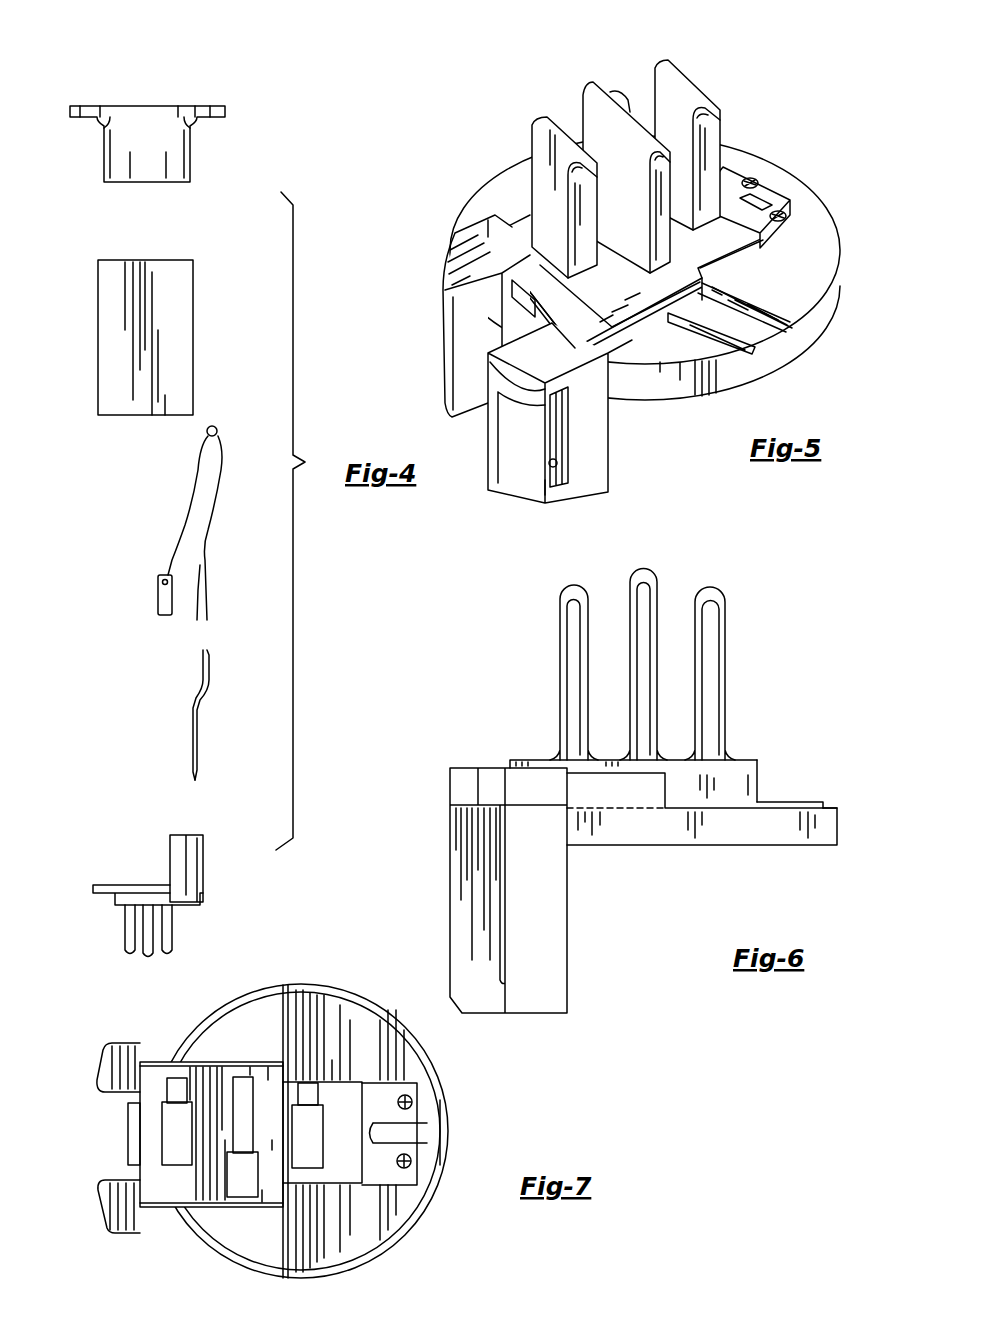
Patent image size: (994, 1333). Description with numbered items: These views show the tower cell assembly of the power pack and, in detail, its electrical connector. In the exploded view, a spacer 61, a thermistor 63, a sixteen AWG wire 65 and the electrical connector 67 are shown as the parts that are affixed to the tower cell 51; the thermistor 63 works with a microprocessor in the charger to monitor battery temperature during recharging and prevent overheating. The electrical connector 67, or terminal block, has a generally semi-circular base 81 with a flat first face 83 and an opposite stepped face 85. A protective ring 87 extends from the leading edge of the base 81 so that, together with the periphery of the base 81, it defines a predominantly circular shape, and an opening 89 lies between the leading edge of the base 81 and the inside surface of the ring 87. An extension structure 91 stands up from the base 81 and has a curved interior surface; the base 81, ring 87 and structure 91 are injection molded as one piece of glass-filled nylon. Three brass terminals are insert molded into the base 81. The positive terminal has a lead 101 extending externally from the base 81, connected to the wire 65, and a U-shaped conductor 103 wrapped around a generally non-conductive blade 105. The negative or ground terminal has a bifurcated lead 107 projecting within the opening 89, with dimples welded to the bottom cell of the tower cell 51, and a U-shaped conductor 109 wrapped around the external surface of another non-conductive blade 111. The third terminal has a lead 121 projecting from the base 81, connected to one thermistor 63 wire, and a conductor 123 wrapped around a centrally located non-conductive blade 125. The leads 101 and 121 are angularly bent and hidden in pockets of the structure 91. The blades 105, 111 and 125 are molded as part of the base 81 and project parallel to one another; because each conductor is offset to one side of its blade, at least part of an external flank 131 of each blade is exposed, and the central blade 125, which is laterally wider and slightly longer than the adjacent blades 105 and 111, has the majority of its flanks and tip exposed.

In FIG. 4, the tower cell 51 is at (120, 333).
In FIG. 4, the spacer 61 is at (110, 150).
In FIG. 4, the thermistor 63 is at (168, 510).
In FIG. 4, the wire 65 is at (195, 730).
In FIG. 4, the electrical connector 67 is at (93, 885).
In FIG. 5, the electrical connector 67 is at (838, 216).
In FIG. 6, the electrical connector 67 is at (645, 892).
In FIG. 7, the electrical connector 67 is at (130, 1025).
In FIG. 5, the base 81 is at (675, 333).
In FIG. 6, the base 81 is at (648, 800).
In FIG. 7, the base 81 is at (312, 1087).
In FIG. 6, the flat first face 83 is at (612, 812).
In FIG. 5, the stepped face 85 is at (505, 232).
In FIG. 6, the stepped face 85 is at (527, 760).
In FIG. 7, the stepped face 85 is at (242, 1040).
In FIG. 5, the protective ring 87 is at (770, 318).
In FIG. 6, the protective ring 87 is at (795, 820).
In FIG. 7, the protective ring 87 is at (425, 1062).
In FIG. 5, the opening 89 is at (748, 350).
In FIG. 7, the opening 89 is at (383, 1063).
In FIG. 5, the extension structure 91 is at (592, 467).
In FIG. 6, the extension structure 91 is at (543, 975).
In FIG. 7, the extension structure 91 is at (112, 1065).
In FIG. 5, the lead 101 is at (518, 317).
In FIG. 7, the lead 101 is at (132, 1140).
In FIG. 5, the U-shaped conductor 103 is at (563, 140).
In FIG. 6, the U-shaped conductor 103 is at (573, 605).
In FIG. 7, the U-shaped conductor 103 is at (178, 1152).
In FIG. 5, the non-conductive blade 105 is at (535, 135).
In FIG. 6, the non-conductive blade 105 is at (573, 643).
In FIG. 7, the non-conductive blade 105 is at (180, 1080).
In FIG. 5, the bifurcated lead 107 is at (745, 165).
In FIG. 6, the bifurcated lead 107 is at (787, 802).
In FIG. 7, the bifurcated lead 107 is at (420, 1113).
In FIG. 5, the conductor 109 is at (710, 95).
In FIG. 6, the conductor 109 is at (705, 592).
In FIG. 7, the conductor 109 is at (310, 1160).
In FIG. 5, the non-conductive blade 111 is at (655, 70).
In FIG. 6, the non-conductive blade 111 is at (727, 623).
In FIG. 7, the non-conductive blade 111 is at (330, 1085).
In FIG. 5, the lead 121 is at (555, 480).
In FIG. 5, the conductor 123 is at (635, 252).
In FIG. 6, the conductor 123 is at (652, 603).
In FIG. 7, the conductor 123 is at (245, 1190).
In FIG. 5, the central blade 125 is at (590, 90).
In FIG. 6, the central blade 125 is at (640, 610).
In FIG. 7, the central blade 125 is at (308, 1010).
In FIG. 5, the external flank 131 is at (615, 95).